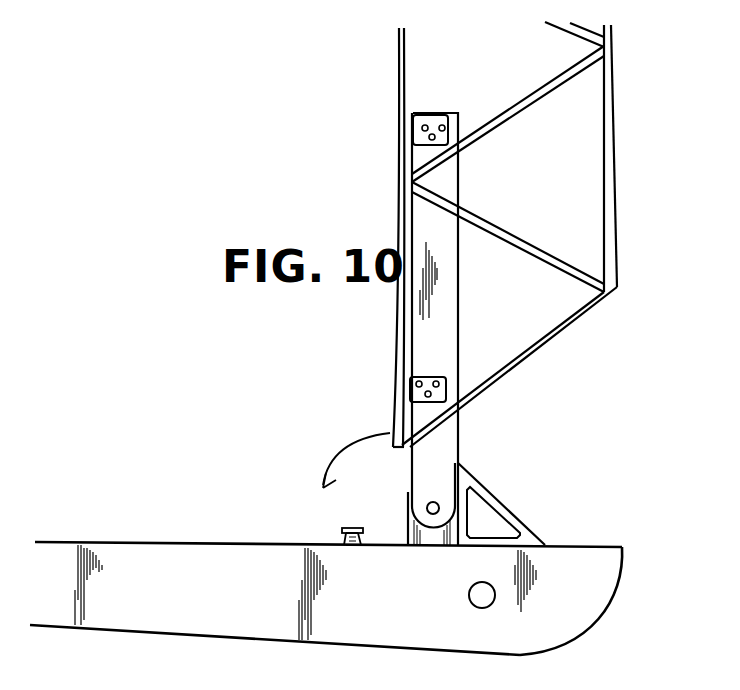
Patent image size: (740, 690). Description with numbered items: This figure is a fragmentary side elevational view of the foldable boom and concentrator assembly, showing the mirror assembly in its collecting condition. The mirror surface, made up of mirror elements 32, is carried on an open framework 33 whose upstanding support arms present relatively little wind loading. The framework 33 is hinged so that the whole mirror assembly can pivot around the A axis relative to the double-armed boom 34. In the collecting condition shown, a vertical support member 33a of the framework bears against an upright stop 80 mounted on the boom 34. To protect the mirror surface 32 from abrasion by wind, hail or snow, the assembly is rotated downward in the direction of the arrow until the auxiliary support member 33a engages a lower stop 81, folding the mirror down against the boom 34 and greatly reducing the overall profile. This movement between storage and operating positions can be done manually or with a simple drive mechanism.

The mirror elements 32 is at (400, 166).
The framework 33 is at (612, 178).
The vertical support member 33a is at (458, 302).
The boom 34 is at (156, 543).
The upright stop 80 is at (507, 510).
The lower stop 81 is at (344, 542).
The A axis A is at (439, 501).